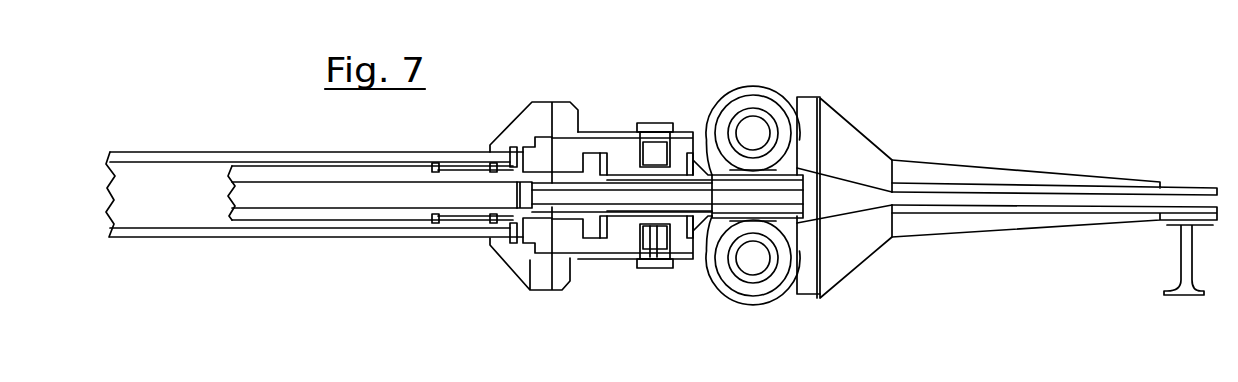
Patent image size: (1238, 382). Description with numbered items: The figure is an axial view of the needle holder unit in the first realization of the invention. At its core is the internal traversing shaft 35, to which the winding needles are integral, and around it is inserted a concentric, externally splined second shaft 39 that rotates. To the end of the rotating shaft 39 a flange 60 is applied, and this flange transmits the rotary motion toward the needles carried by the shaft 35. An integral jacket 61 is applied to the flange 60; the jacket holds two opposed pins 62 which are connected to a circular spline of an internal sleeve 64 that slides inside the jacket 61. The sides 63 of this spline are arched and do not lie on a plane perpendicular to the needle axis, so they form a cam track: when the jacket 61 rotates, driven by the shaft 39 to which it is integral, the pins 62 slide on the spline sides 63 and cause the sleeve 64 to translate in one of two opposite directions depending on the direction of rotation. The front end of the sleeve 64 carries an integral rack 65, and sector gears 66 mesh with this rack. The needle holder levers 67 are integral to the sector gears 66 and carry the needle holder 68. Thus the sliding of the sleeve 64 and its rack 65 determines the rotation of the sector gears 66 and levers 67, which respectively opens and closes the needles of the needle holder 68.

The shaft 35 is at (317, 212).
The second shaft 39 is at (296, 153).
The flange 60 is at (526, 122).
The jacket 61 is at (562, 115).
The pins 62 is at (660, 132).
The sides of the spline 63 is at (640, 157).
The internal sleeve 64 is at (615, 240).
The rack 65 is at (787, 212).
The sector gears 66 is at (735, 128).
The needle holder levers 67 is at (937, 228).
The needle holder 68 is at (1178, 290).